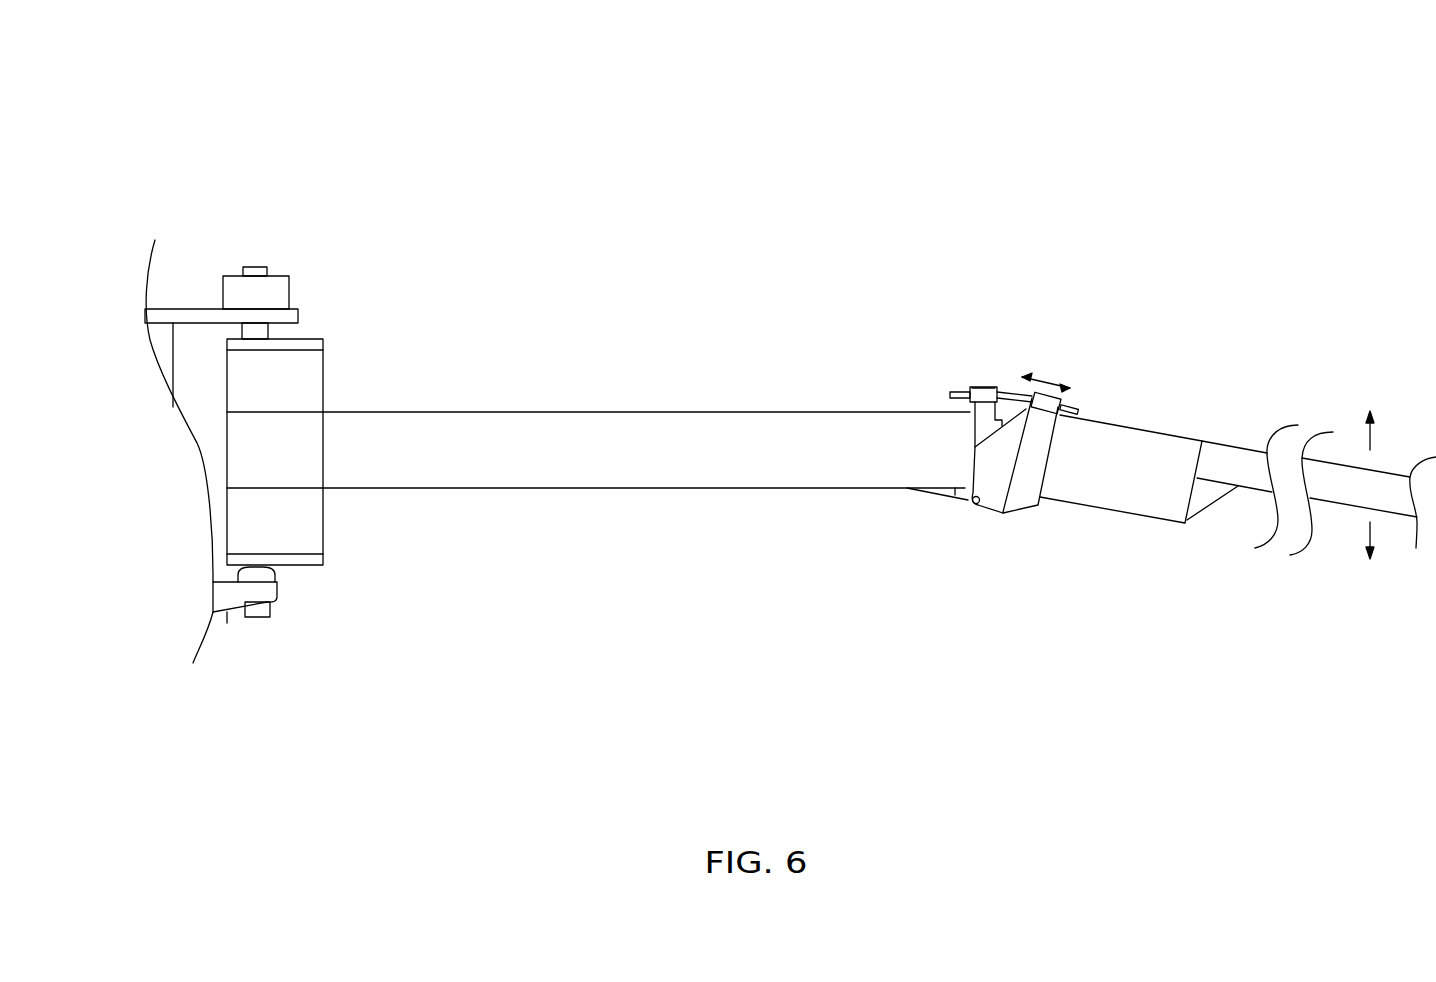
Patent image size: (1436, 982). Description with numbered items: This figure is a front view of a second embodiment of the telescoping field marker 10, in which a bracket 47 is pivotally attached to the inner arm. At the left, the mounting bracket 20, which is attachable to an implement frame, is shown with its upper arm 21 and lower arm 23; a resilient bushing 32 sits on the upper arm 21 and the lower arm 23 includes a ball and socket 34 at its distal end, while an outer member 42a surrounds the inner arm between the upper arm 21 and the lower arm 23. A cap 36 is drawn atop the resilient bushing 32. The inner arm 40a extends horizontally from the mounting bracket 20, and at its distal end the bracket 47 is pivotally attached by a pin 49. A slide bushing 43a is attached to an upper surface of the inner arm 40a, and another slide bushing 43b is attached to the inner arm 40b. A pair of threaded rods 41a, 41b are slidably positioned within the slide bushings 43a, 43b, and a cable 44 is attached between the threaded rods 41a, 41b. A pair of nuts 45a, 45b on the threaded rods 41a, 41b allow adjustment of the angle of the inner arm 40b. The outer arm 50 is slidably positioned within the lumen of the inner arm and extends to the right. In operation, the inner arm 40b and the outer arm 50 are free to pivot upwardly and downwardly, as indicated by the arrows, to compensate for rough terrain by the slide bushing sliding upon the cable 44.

The telescoping field marker 10 is at (1031, 150).
The mounting bracket 20 is at (195, 338).
The upper arm 21 is at (293, 308).
The lower arm 23 is at (227, 623).
The resilient bushing 32 is at (289, 276).
The ball and socket 34 is at (277, 575).
The bearing cap 36 is at (248, 267).
The inner arm 40a is at (762, 411).
The inner arm 40b is at (1085, 420).
The threaded rod 41a is at (950, 395).
The threaded rod 41b is at (1066, 413).
The outer member 42a is at (322, 339).
The slide bushing 43a is at (985, 387).
The slide bushing 43b is at (1080, 398).
The cable 44 is at (1013, 392).
The nut 45a is at (960, 392).
The nut 45b is at (1078, 413).
The bracket 47 is at (1030, 515).
The pin 49 is at (968, 505).
The outer arm 50 is at (1222, 432).